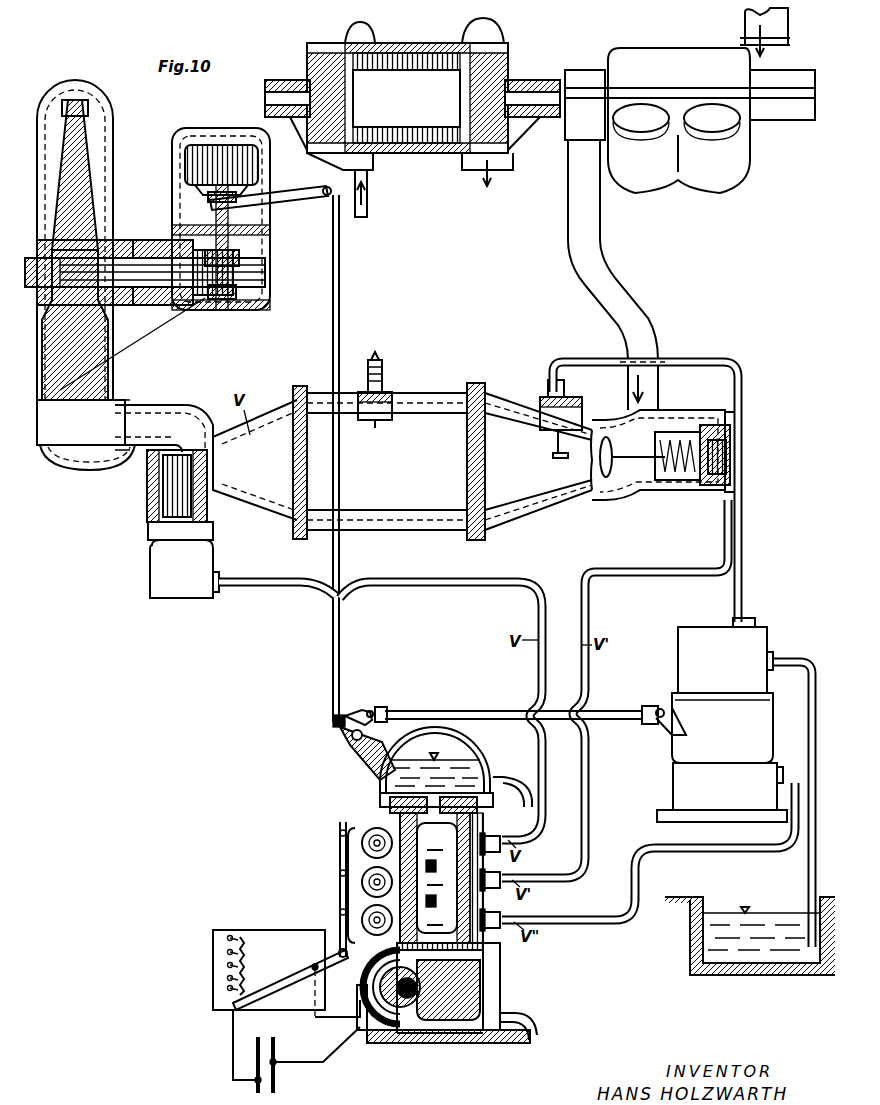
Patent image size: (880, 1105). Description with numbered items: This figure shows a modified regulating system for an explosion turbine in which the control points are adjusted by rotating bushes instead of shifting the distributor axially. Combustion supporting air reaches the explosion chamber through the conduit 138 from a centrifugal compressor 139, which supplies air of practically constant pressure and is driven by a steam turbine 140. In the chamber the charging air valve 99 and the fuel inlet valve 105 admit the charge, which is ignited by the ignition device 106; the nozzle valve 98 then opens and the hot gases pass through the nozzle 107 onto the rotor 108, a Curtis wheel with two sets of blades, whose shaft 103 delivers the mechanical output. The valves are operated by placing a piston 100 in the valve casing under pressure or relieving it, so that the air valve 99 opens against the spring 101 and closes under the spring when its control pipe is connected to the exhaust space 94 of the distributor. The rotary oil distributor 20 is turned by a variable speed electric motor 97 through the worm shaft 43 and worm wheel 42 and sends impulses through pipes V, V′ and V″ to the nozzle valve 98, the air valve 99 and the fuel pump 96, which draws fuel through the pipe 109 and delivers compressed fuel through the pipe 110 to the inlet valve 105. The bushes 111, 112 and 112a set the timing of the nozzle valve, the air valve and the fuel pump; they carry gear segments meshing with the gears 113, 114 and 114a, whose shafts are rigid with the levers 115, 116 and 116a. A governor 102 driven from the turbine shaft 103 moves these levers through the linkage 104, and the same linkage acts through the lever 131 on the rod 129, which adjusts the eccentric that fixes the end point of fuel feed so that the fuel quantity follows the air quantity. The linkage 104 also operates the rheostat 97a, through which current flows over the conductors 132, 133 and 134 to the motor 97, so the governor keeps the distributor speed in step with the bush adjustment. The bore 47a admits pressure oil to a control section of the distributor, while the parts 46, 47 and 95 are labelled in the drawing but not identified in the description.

The governor 102 is at (200, 158).
The rotor 108 is at (93, 168).
The shaft 103 is at (162, 268).
The regulating linkage 104 is at (290, 198).
The steam turbine 140 is at (400, 113).
The centrifugal compressor 139 is at (663, 62).
The conduit 138 is at (585, 240).
The pipe 110 is at (598, 362).
The ignition device 106 is at (380, 392).
The fuel inlet valve 105 is at (553, 405).
The piston 100 is at (712, 423).
The air valve 99 is at (649, 455).
The spring 101 is at (673, 480).
The nozzle 107 is at (122, 423).
The nozzle valve 98 is at (150, 470).
The fuel pump 96 is at (688, 648).
The pipe 109 is at (810, 708).
The lever 131 is at (350, 714).
The rod 129 is at (470, 711).
The lever 115 is at (345, 832).
The bush 111 is at (438, 826).
The port 46 is at (440, 855).
The gear 113 is at (360, 850).
The bush 112 is at (438, 870).
The lever 116 is at (348, 875).
The port 47 is at (439, 888).
The gear 114 is at (357, 893).
The bush 112a is at (441, 903).
The lever 116a is at (348, 915).
The bore 47a is at (444, 928).
The pump body 95 is at (488, 932).
The rotary distributor 20 is at (487, 960).
The exhaust space 94 is at (475, 975).
The worm shaft 43 is at (409, 978).
The worm wheel 42 is at (448, 993).
The gear 114a is at (365, 953).
The electric motor 97 is at (370, 983).
The rheostat 97a is at (265, 937).
The conductor 133 is at (315, 1017).
The conductor 132 is at (233, 1042).
The conductor 134 is at (280, 1063).